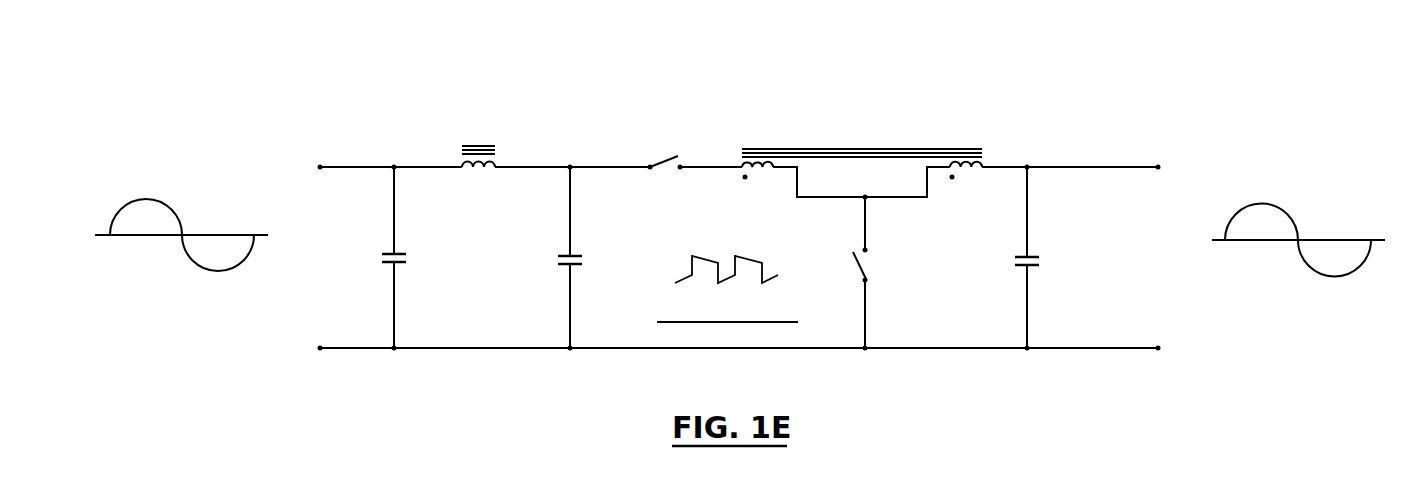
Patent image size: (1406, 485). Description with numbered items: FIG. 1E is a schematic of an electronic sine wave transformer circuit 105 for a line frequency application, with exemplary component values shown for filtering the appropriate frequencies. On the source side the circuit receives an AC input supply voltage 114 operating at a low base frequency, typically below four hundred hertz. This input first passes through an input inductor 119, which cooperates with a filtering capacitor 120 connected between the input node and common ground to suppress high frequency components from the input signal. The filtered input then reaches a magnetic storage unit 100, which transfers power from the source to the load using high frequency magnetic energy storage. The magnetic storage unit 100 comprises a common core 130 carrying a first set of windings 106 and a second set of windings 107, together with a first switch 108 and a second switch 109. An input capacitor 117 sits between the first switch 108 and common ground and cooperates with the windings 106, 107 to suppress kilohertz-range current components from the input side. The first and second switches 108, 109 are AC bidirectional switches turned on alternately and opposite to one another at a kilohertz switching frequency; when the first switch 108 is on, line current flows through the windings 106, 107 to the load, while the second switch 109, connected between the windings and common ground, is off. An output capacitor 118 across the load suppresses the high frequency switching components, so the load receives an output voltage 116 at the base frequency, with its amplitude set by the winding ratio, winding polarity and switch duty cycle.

The magnetic storage unit 100 is at (928, 332).
The electronic sine wave transformer circuit 105 is at (1189, 163).
The first set of windings 106 is at (734, 158).
The second set of windings 107 is at (990, 158).
The first switch 108 is at (660, 148).
The second switch 109 is at (851, 269).
The input supply voltage 114 is at (166, 187).
The output voltage 116 is at (1270, 196).
The input capacitor 117 is at (587, 244).
The output capacitor 118 is at (1067, 242).
The input inductor 119 is at (485, 141).
The filtering capacitor 120 is at (412, 244).
The common core 130 is at (903, 154).